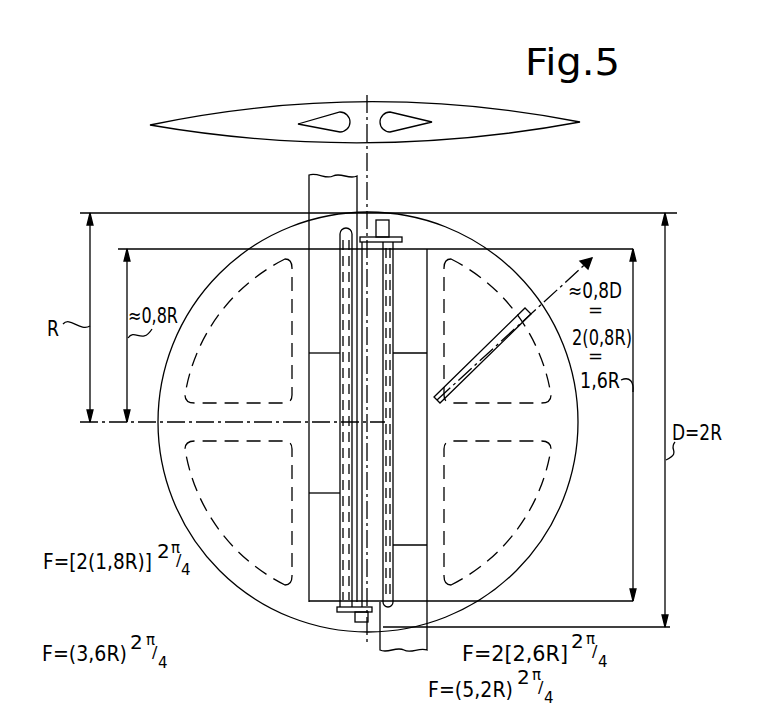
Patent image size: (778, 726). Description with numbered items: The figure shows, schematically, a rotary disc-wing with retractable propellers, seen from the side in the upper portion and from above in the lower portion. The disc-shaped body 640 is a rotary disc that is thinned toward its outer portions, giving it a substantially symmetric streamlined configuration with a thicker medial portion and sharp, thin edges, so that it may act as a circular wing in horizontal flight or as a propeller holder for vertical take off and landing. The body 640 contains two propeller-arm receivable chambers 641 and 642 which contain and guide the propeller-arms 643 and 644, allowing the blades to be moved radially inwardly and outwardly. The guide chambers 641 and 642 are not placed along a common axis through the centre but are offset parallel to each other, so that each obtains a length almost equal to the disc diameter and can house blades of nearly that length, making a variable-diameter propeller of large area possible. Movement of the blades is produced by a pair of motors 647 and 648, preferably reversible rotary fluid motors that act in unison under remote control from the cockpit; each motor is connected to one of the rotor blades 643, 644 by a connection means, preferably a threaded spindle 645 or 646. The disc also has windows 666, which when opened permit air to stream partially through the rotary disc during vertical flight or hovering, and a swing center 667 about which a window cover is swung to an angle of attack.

The disc-shaped body 640 is at (480, 122).
The propeller-arm receivable chamber 641 is at (338, 125).
The propeller-arm receivable chamber 642 is at (387, 125).
The propeller-arm 643 is at (318, 288).
The propeller-arm 644 is at (420, 544).
The threaded spindle 645 is at (343, 318).
The threaded spindle 646 is at (393, 405).
The rotary fluid motor 647 is at (353, 617).
The rotary fluid motor 648 is at (390, 221).
The window 666 is at (216, 380).
The swing center 667 is at (500, 336).